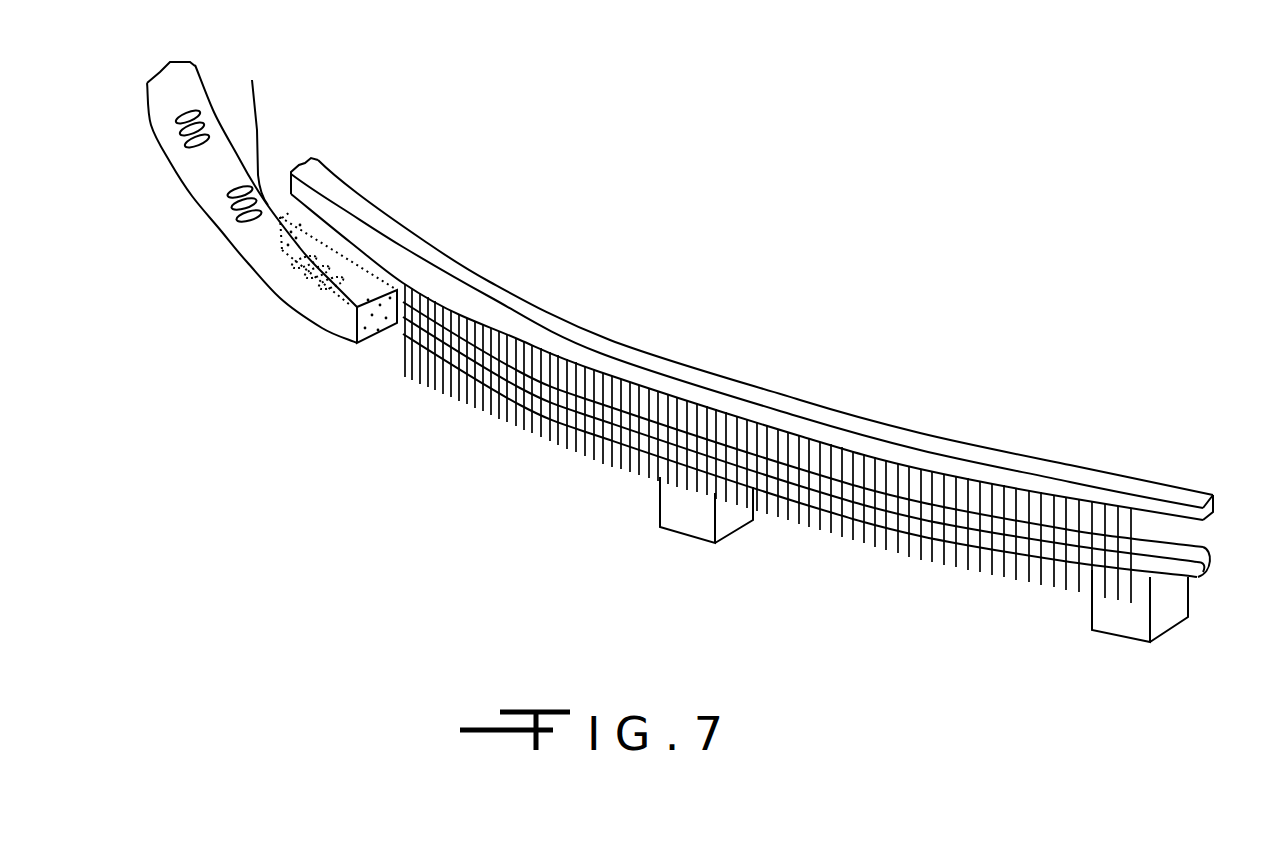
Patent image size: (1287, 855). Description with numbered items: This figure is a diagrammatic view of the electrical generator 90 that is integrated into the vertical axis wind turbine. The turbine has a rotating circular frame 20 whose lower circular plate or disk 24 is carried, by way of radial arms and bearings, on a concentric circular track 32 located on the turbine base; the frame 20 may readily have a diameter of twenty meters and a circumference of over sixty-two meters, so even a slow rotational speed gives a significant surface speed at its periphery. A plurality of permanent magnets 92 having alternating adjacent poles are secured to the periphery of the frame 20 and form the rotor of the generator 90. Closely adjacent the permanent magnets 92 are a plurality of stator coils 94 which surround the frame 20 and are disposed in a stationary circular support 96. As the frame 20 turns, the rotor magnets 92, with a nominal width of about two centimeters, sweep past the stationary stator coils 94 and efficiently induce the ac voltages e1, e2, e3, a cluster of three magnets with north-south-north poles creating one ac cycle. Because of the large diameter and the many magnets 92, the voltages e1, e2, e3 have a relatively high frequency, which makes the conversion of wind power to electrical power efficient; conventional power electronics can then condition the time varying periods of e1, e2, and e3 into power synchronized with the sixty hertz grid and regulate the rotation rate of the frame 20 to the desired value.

The circular frame 20 is at (785, 437).
The lower circular plate or disk 24 is at (667, 360).
The circular track 32 is at (1205, 573).
The electrical generator 90 is at (361, 252).
The permanent magnets 92 is at (950, 560).
The stator coils 94 is at (208, 117).
The circular support 96 is at (314, 335).
The ac voltage e1 is at (210, 152).
The ac voltage e2 is at (262, 226).
The ac voltage e3 is at (288, 301).